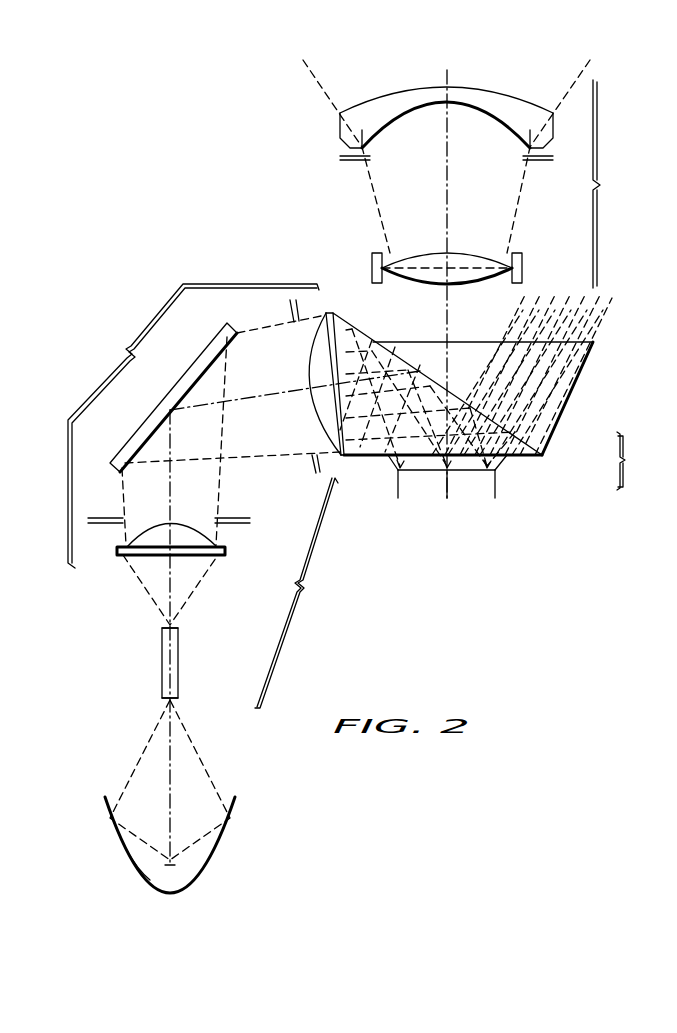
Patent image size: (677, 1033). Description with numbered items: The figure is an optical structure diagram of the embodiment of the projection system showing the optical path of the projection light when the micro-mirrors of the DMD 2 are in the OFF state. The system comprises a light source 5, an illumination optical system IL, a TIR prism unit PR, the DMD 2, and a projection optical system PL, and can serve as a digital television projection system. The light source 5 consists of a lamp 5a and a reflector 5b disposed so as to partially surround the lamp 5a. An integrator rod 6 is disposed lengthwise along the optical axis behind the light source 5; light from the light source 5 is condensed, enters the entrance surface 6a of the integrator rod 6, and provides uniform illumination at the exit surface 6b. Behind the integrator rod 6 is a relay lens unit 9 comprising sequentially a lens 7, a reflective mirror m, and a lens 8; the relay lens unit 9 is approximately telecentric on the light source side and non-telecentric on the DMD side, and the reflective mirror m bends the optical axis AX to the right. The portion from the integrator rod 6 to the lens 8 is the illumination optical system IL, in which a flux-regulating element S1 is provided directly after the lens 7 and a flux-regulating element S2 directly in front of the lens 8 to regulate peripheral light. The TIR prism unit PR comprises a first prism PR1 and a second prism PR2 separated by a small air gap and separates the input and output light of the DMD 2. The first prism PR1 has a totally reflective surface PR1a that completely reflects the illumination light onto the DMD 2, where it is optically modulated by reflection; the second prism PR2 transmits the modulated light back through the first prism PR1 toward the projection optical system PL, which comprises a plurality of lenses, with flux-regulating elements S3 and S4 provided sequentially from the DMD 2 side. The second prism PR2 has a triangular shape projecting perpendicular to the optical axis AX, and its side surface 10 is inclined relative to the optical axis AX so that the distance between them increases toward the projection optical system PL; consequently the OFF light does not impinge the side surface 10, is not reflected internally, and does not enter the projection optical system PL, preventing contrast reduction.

The DMD 2 is at (458, 472).
The light source 5 is at (234, 845).
The lamp 5a is at (170, 870).
The reflector 5b is at (122, 850).
The integrator rod 6 is at (162, 663).
The entrance surface 6a is at (162, 700).
The exit surface 6b is at (160, 623).
The lens 7 is at (160, 526).
The lens 8 is at (310, 370).
The relay lens unit 9 is at (193, 426).
The side surface 10 is at (583, 366).
The reflective mirror m is at (167, 397).
The optical axis AX is at (270, 397).
The flux-regulating element S1 is at (237, 526).
The flux-regulating element S2 is at (312, 470).
The flux-regulating element S3 is at (375, 266).
The flux-regulating element S4 is at (345, 162).
The TIR prism unit PR is at (636, 461).
The first prism PR1 is at (532, 457).
The totally reflective surface PR1a is at (520, 457).
The second prism PR2 is at (540, 437).
The projection optical system PL is at (484, 184).
The illumination optical system IL is at (296, 593).